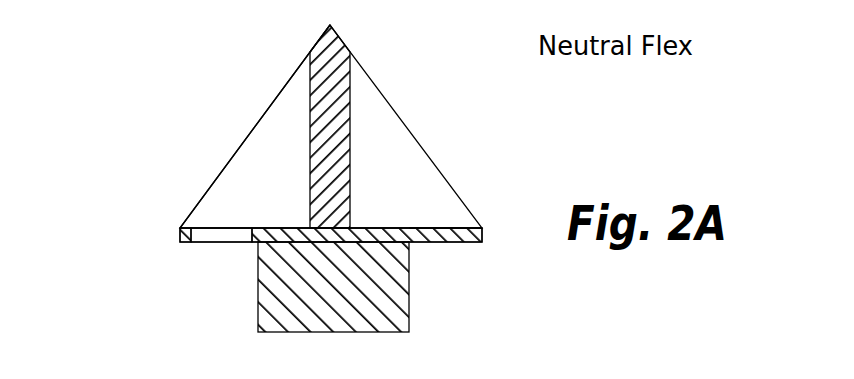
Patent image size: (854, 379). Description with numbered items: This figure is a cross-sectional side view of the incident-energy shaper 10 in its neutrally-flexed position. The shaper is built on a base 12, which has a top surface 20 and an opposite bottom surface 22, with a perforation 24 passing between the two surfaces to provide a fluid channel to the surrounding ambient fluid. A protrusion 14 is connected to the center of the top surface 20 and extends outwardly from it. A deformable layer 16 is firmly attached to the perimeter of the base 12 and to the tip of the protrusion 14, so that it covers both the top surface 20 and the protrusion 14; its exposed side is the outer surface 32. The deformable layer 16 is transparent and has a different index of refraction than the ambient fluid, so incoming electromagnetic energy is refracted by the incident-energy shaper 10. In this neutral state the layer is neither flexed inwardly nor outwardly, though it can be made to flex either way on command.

The incident-energy shaper 10 is at (112, 70).
The base 12 is at (178, 238).
The protrusion 14 is at (350, 150).
The deformable layer 16 is at (382, 96).
The top surface 20 is at (452, 223).
The bottom surface 22 is at (447, 246).
The perforation 24 is at (228, 216).
The outer surface 32 is at (266, 104).